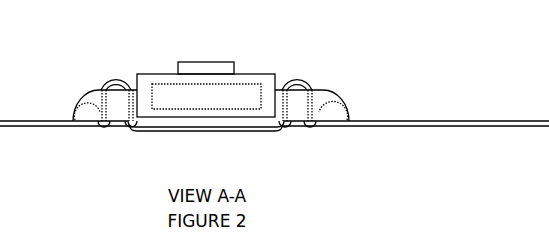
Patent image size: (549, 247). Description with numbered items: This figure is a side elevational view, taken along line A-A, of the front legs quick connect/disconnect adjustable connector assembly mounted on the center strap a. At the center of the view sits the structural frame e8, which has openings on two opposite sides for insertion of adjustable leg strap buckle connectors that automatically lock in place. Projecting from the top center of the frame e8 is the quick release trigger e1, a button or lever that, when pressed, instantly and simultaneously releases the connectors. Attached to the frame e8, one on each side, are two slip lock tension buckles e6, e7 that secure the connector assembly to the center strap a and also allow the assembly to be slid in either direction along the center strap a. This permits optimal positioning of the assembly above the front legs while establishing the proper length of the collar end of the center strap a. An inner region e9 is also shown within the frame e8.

The center strap a is at (430, 117).
The quick release trigger e1 is at (205, 60).
The slip lock tension buckle e6 is at (105, 78).
The slip lock tension buckle e7 is at (314, 77).
The structural frame e8 is at (252, 64).
The inner cavity e9 is at (233, 105).